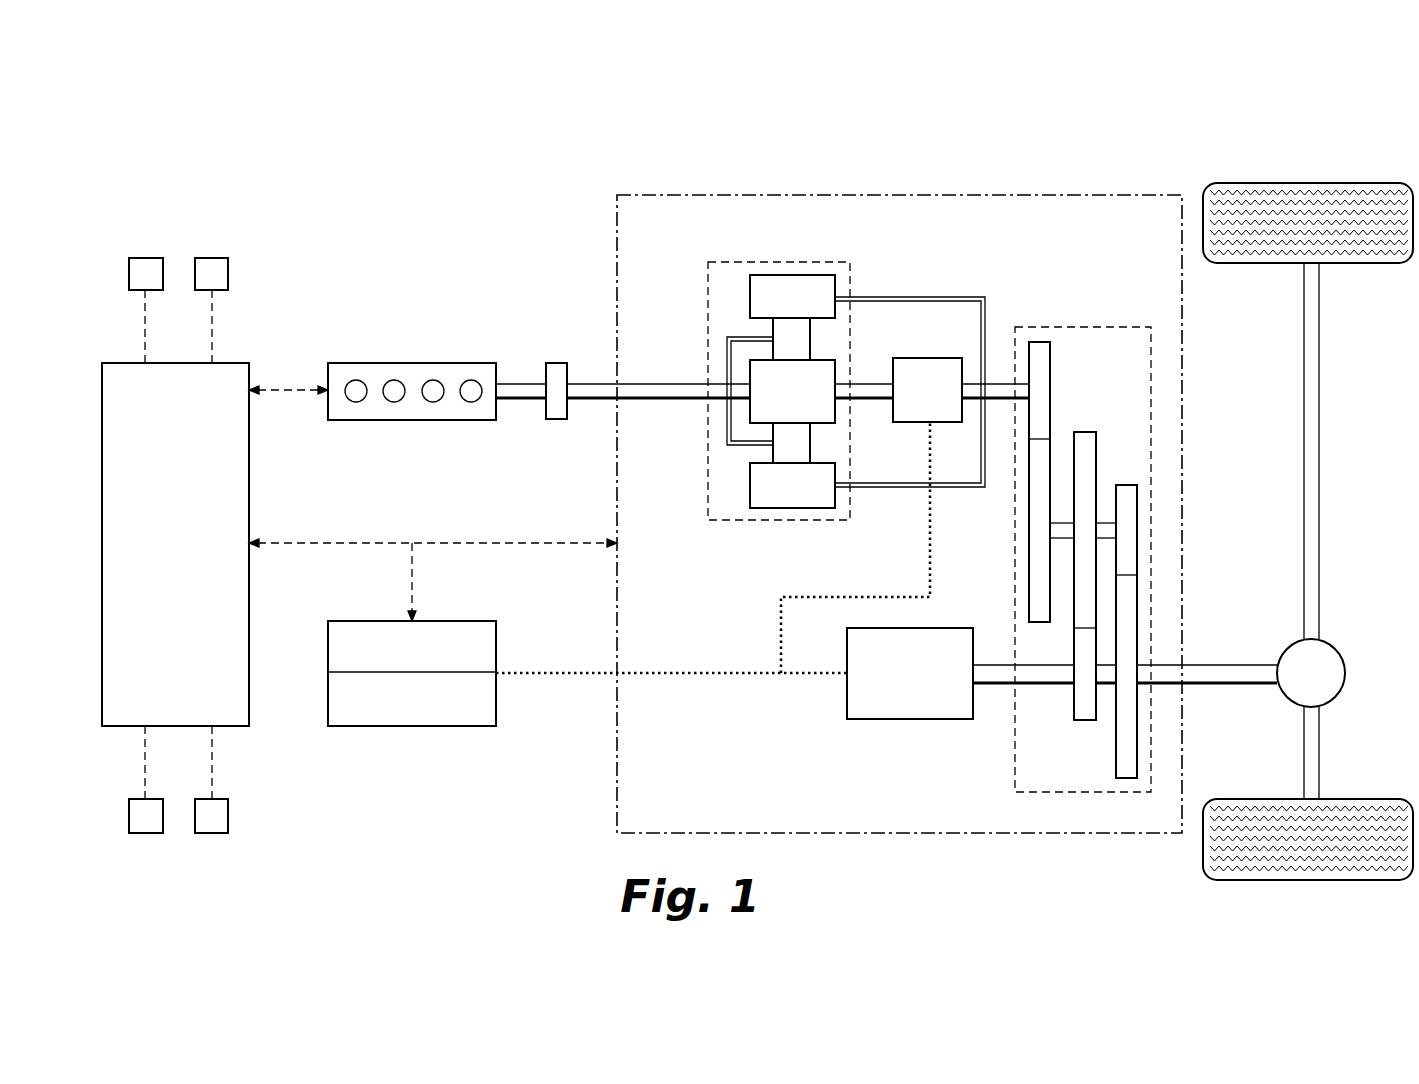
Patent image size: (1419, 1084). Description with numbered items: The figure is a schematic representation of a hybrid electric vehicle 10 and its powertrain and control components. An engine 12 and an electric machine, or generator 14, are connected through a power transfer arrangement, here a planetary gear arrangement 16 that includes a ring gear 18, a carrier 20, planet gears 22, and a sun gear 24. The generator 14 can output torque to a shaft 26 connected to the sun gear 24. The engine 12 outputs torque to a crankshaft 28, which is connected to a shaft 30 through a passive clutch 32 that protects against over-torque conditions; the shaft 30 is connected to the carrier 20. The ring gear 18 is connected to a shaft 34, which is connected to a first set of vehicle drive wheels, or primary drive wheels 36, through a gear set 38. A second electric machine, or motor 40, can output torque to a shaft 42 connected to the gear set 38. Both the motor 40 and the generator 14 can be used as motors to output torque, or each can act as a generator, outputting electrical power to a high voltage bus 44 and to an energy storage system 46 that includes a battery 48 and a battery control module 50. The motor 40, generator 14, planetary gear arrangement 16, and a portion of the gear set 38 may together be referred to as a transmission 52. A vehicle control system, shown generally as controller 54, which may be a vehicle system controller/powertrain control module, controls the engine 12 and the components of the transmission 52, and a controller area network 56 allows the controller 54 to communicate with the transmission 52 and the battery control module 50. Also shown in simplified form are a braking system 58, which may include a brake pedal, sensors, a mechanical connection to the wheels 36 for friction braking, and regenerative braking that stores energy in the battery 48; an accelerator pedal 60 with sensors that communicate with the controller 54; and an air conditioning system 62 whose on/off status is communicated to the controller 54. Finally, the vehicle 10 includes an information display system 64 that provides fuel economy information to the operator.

The vehicle 10 is at (1136, 144).
The engine 12 is at (375, 363).
The generator 14 is at (922, 358).
The planetary gear arrangement 16 is at (782, 262).
The ring gear 18 is at (750, 293).
The carrier 20 is at (727, 358).
The planet gears 22 is at (773, 332).
The sun gear 24 is at (835, 418).
The shaft 26 is at (870, 382).
The crankshaft 28 is at (530, 399).
The shaft 30 is at (597, 399).
The passive clutch 32 is at (559, 363).
The shaft 34 is at (1005, 383).
The primary drive wheels 36 is at (1350, 275).
The gear set 38 is at (1092, 802).
The motor 40 is at (912, 720).
The shaft 42 is at (998, 667).
The high voltage bus 44 is at (717, 672).
The energy storage system 46 is at (320, 665).
The battery 48 is at (470, 621).
The battery control module 50 is at (470, 726).
The transmission 52 is at (608, 242).
The controller 54 is at (228, 363).
The controller area network 56 is at (350, 543).
The braking system 58 is at (145, 833).
The accelerator pedal 60 is at (212, 833).
The air conditioning system 62 is at (212, 258).
The information display system 64 is at (146, 258).